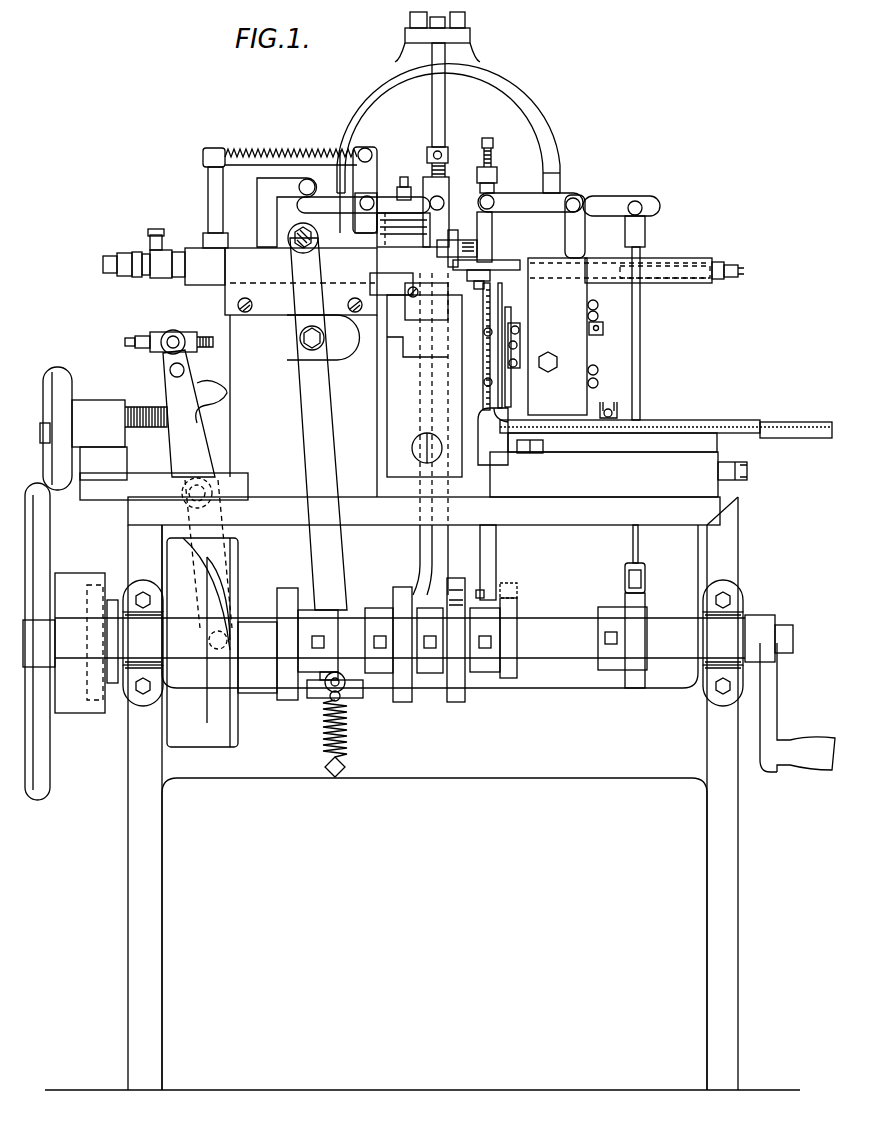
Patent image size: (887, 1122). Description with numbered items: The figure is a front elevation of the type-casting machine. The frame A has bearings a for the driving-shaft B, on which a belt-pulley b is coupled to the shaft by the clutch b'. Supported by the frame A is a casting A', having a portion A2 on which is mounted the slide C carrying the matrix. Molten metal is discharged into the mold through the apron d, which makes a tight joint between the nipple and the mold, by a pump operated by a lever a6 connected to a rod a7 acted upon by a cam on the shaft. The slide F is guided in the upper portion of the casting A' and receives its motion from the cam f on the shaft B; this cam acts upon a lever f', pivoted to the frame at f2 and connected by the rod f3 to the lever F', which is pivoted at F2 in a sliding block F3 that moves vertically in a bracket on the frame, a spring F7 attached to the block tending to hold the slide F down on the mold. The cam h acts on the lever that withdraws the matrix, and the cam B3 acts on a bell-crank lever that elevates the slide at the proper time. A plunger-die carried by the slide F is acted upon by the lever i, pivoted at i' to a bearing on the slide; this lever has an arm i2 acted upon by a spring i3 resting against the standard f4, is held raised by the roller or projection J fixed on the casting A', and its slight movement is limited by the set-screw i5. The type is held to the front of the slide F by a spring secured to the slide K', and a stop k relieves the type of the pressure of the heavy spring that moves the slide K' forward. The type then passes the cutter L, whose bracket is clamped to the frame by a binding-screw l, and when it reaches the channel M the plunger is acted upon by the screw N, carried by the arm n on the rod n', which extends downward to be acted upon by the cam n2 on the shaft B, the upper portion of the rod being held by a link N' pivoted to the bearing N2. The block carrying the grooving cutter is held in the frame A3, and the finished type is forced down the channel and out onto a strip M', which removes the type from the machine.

The binding-screw l is at (437, 17).
The spring i3 is at (275, 152).
The standard f4 is at (218, 198).
The roller or projection J is at (287, 205).
The arm i2 is at (377, 169).
The lever i is at (363, 205).
The pivot i' is at (366, 213).
The set-screw i5 is at (405, 185).
The cutter L is at (436, 212).
The stop k is at (452, 245).
The arm n is at (478, 160).
The screw N is at (495, 180).
The link N' is at (530, 202).
The rod n' is at (487, 406).
The bearing N2 is at (572, 226).
The lever a6 is at (621, 308).
The frame A3 is at (572, 338).
The slide K' is at (492, 277).
The channel M is at (501, 346).
The slide F is at (164, 257).
The casting A' is at (424, 386).
The lever F' is at (323, 416).
The rod f3 is at (197, 334).
The lever f' is at (136, 499).
The pivot f2 is at (195, 493).
The slide C is at (426, 301).
The portion of casting A2 is at (424, 434).
The strip M' is at (655, 452).
The frame A is at (422, 793).
The belt-pulley b is at (64, 643).
The clutch b' is at (115, 629).
The shaft B is at (445, 690).
The bearings a is at (433, 643).
The cam f is at (232, 642).
The cam h is at (402, 644).
The cam B3 is at (456, 640).
The cam n2 is at (517, 607).
The rod a7 is at (640, 549).
The apron d is at (622, 640).
The sliding block F3 is at (316, 699).
The pivot F2 is at (345, 690).
The spring F7 is at (348, 740).